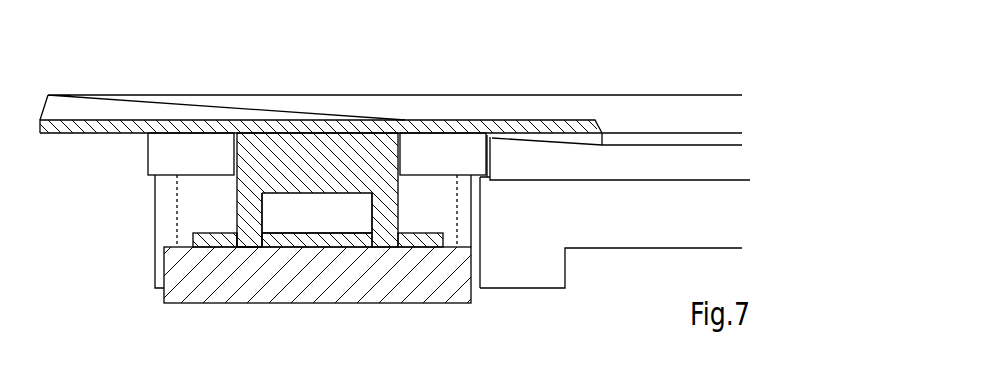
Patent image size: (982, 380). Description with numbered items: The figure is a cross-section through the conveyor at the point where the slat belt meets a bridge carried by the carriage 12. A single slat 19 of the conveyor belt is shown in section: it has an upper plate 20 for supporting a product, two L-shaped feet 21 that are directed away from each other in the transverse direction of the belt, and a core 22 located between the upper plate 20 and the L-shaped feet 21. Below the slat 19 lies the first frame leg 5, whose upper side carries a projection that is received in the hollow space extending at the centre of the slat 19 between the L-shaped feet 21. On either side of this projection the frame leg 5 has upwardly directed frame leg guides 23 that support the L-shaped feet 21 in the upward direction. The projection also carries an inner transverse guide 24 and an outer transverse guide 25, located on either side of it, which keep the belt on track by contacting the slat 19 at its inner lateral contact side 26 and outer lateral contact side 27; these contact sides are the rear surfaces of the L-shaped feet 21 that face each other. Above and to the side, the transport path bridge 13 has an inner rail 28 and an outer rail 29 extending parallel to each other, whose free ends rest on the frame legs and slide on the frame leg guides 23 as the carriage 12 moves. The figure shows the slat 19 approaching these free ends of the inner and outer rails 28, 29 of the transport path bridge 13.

The first frame leg 5 is at (192, 280).
The carriage 12 is at (602, 233).
The transport path bridge 13 is at (625, 156).
The slat 19 is at (338, 134).
The upper plate 20 is at (442, 124).
The L-shaped foot 21 is at (243, 197).
The core 22 is at (283, 160).
The frame leg guide 23 is at (218, 245).
The inner transverse guide 24 is at (384, 245).
The outer transverse guide 25 is at (252, 238).
The inner lateral contact side 26 is at (372, 208).
The outer lateral contact side 27 is at (262, 213).
The inner rail 28 is at (465, 155).
The outer rail 29 is at (165, 159).